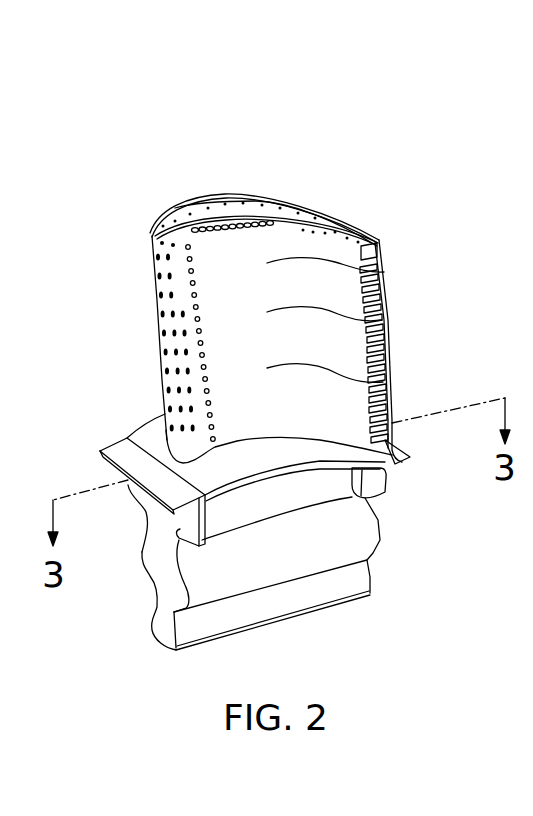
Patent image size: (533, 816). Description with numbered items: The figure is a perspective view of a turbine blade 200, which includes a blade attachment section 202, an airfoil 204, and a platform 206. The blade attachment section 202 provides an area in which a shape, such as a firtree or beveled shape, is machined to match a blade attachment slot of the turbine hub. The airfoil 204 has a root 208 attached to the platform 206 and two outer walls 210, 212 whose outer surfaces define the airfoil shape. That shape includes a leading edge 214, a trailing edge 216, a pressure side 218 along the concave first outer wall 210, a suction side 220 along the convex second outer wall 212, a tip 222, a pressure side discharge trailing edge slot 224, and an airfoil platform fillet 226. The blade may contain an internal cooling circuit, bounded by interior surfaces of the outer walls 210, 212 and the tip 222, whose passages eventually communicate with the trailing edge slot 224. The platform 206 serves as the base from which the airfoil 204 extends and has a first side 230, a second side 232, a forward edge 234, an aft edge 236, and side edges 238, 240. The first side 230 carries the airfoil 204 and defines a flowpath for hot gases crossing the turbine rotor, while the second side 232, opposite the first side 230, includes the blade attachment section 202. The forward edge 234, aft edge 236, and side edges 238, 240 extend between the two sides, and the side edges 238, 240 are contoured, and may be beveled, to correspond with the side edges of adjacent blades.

The blade 200 is at (379, 128).
The blade attachment section 202 is at (267, 585).
The airfoil 204 is at (382, 320).
The platform 206 is at (167, 492).
The root 208 is at (302, 436).
The first outer wall 210 is at (384, 272).
The second outer wall 212 is at (258, 196).
The leading edge 214 is at (157, 328).
The trailing edge 216 is at (384, 248).
The pressure side 218 is at (383, 382).
The suction side 220 is at (155, 222).
The tip 222 is at (205, 195).
The pressure side discharge trailing edge slot 224 is at (388, 342).
The airfoil platform fillet 226 is at (239, 439).
The first side 230 is at (138, 427).
The second side 232 is at (364, 497).
The forward edge 234 is at (108, 461).
The aft edge 236 is at (405, 448).
The side edge 238 is at (228, 480).
The side edge 240 is at (124, 437).